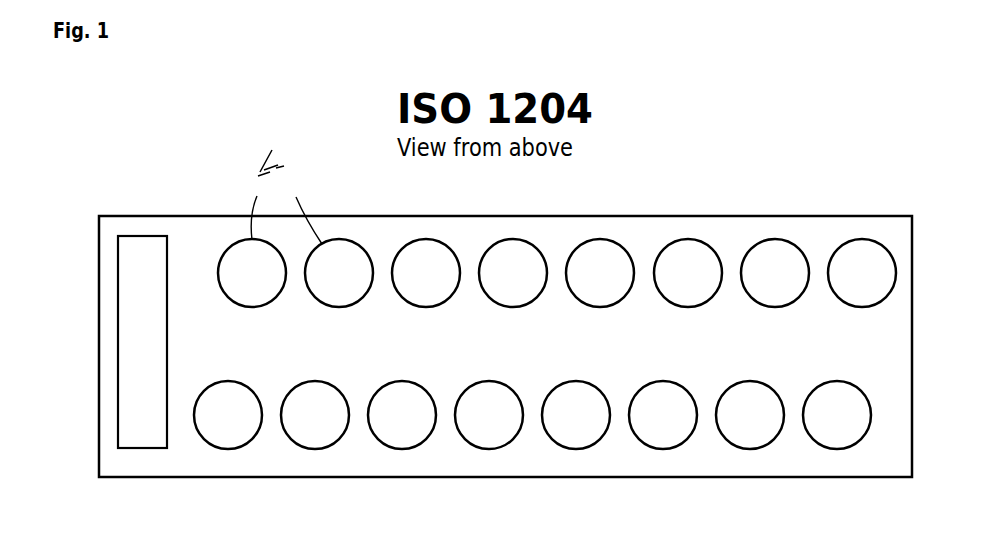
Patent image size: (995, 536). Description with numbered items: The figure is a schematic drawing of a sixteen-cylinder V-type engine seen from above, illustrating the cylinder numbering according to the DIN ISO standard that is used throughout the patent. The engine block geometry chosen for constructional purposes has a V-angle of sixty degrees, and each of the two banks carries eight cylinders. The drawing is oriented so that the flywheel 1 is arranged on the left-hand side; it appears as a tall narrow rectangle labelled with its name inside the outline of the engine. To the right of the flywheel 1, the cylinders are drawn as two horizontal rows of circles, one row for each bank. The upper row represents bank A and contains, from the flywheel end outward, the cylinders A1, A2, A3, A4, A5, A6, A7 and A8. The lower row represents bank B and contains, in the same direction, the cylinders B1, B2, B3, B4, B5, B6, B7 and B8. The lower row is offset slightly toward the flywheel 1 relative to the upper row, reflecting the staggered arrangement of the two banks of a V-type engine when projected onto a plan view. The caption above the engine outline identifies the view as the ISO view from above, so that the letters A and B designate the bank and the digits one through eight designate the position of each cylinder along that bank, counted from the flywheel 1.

The flywheel 1 is at (123, 417).
The cylinder A1 is at (252, 273).
The cylinder A2 is at (339, 273).
The cylinder A3 is at (426, 273).
The cylinder A4 is at (513, 273).
The cylinder A5 is at (600, 273).
The cylinder A6 is at (688, 273).
The cylinder A7 is at (775, 273).
The cylinder A8 is at (862, 273).
The cylinder B1 is at (228, 415).
The cylinder B2 is at (315, 415).
The cylinder B3 is at (402, 415).
The cylinder B4 is at (489, 415).
The cylinder B5 is at (576, 415).
The cylinder B6 is at (663, 415).
The cylinder B7 is at (750, 415).
The cylinder B8 is at (837, 415).